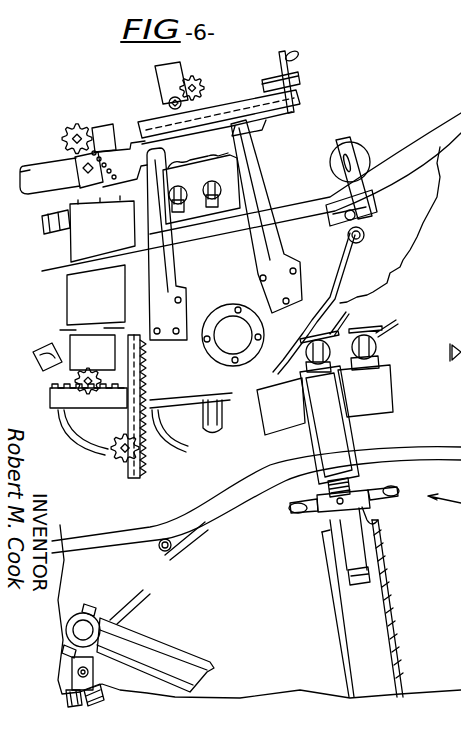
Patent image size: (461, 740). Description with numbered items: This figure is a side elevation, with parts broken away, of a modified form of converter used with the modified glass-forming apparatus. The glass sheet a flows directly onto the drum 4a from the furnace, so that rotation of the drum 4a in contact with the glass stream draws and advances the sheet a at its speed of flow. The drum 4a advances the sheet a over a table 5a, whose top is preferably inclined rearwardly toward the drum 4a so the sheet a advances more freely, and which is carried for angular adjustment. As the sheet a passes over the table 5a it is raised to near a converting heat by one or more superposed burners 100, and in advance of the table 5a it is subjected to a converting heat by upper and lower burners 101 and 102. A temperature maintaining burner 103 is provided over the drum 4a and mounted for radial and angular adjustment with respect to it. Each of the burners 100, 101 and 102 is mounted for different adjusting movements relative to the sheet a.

The superposed burner 100 is at (218, 173).
The upper burner 101 is at (102, 231).
The lower burner 102 is at (96, 295).
The temperature maintaining burner 103 is at (368, 380).
The table 5a is at (240, 378).
The drum 4a is at (402, 242).
The glass sheet a is at (408, 165).